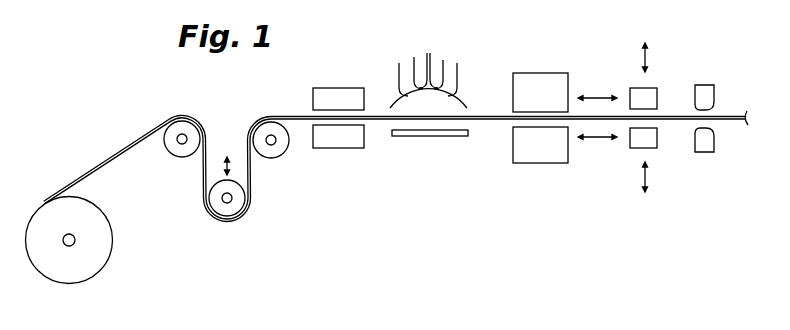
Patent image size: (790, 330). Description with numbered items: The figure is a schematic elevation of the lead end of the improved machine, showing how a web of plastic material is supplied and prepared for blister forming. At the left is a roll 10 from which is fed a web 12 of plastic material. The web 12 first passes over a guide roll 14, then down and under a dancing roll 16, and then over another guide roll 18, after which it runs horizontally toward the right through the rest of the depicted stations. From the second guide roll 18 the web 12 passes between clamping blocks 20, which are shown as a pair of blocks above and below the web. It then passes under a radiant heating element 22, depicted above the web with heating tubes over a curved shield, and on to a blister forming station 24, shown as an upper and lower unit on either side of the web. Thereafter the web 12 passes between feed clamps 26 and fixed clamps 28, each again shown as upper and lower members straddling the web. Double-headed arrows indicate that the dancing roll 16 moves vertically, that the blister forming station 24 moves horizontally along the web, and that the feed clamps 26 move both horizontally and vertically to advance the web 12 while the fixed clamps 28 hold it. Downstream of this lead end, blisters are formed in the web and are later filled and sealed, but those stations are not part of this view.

The roll 10 is at (63, 284).
The web 12 is at (125, 148).
The guide roll 14 is at (177, 157).
The dancing roll 16 is at (222, 219).
The guide roll 18 is at (284, 152).
The clamping blocks 20 is at (332, 88).
The radiant heating element 22 is at (440, 54).
The blister forming station 24 is at (554, 73).
The feed clamps 26 is at (657, 89).
The fixed clamps 28 is at (714, 86).